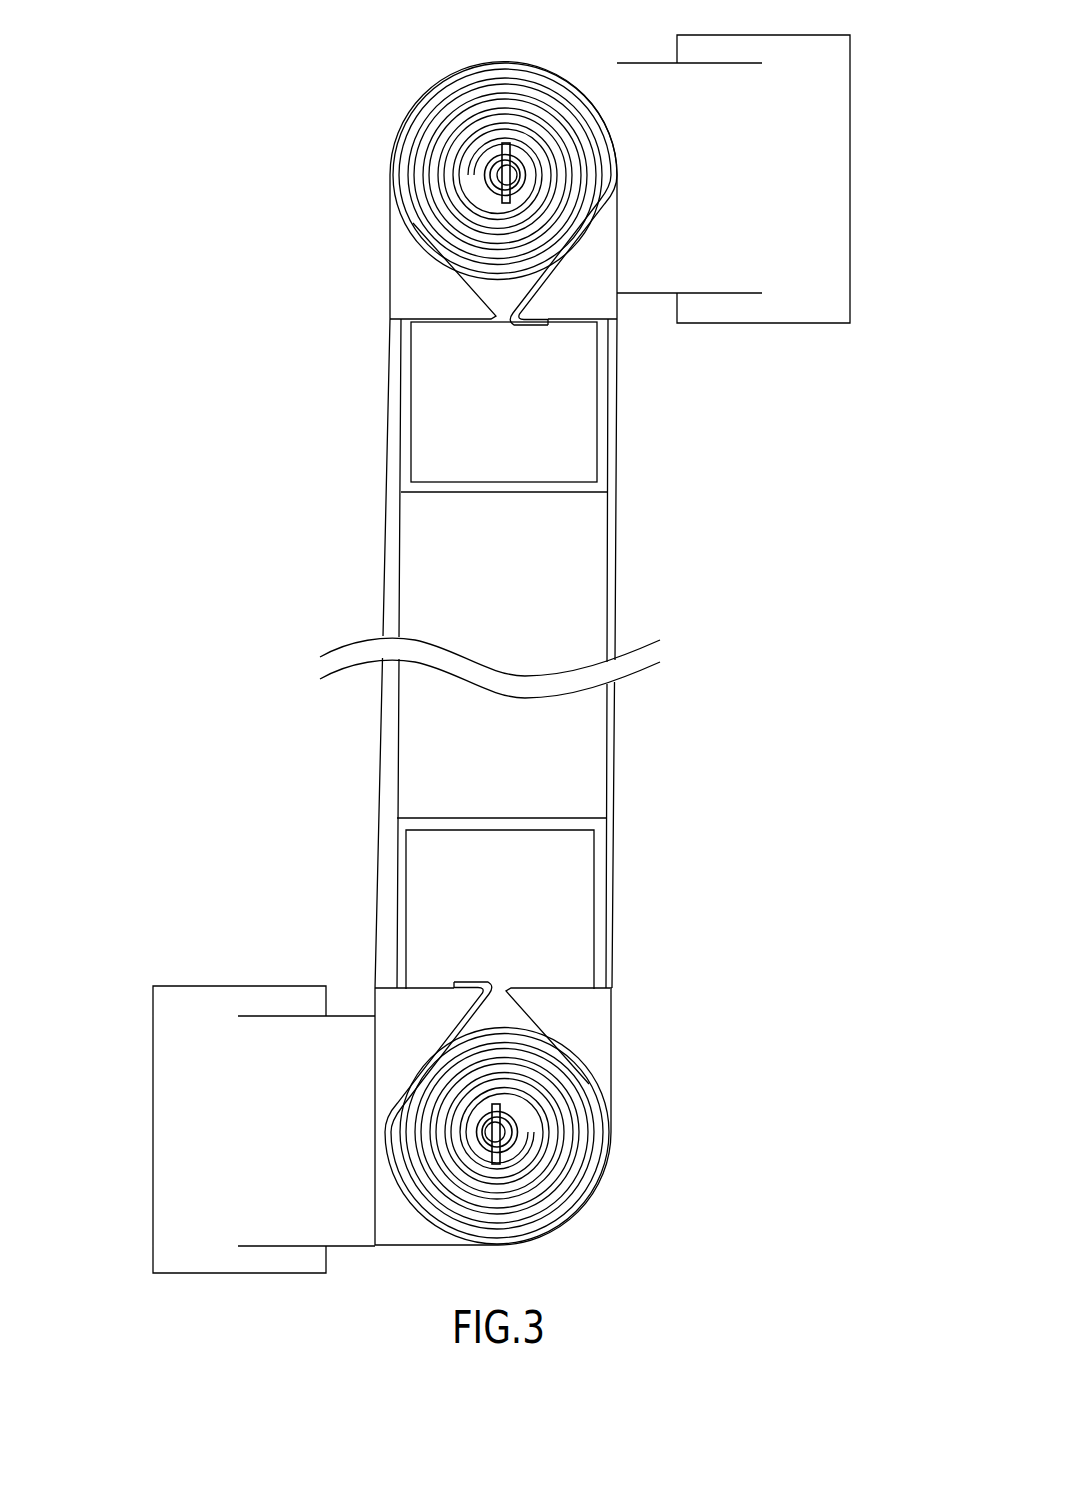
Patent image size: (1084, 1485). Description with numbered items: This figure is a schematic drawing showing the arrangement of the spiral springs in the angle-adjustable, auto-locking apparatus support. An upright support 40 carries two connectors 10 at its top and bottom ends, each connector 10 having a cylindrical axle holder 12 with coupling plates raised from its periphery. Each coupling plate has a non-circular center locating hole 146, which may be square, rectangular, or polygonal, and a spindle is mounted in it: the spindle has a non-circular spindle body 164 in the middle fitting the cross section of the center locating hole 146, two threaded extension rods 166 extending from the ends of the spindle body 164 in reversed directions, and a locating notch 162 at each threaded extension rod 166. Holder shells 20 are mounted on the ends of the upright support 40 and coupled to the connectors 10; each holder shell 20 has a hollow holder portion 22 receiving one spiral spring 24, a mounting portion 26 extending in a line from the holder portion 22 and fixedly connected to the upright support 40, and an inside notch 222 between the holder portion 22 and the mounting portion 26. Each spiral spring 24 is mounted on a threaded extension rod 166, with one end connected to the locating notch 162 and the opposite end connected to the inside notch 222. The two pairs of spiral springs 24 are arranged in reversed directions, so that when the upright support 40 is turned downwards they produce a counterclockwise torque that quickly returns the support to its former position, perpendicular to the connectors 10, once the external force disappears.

The connector 10 is at (774, 361).
The cylindrical axle holder 12 is at (795, 217).
The holder shell 20 is at (351, 270).
The hollow holder portion 22 is at (425, 227).
The spiral spring 24 is at (420, 160).
The mounting portion 26 is at (538, 440).
The upright support 40 is at (432, 588).
The non-circular center locating hole 146 is at (497, 155).
The locating notch 162 is at (513, 150).
The non-circular spindle body 164 is at (485, 165).
The threaded extension rod 166 is at (487, 172).
The inside notch 222 is at (500, 322).